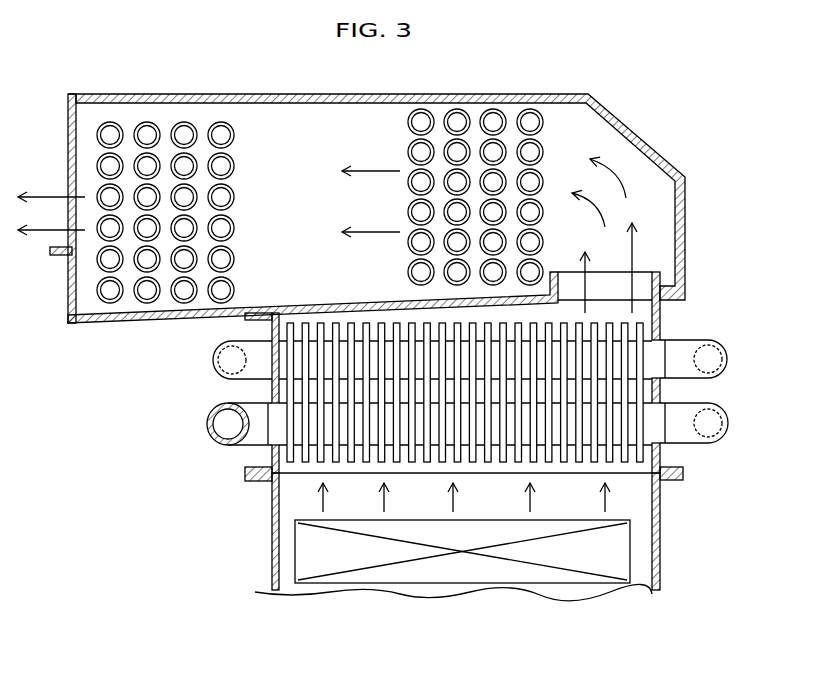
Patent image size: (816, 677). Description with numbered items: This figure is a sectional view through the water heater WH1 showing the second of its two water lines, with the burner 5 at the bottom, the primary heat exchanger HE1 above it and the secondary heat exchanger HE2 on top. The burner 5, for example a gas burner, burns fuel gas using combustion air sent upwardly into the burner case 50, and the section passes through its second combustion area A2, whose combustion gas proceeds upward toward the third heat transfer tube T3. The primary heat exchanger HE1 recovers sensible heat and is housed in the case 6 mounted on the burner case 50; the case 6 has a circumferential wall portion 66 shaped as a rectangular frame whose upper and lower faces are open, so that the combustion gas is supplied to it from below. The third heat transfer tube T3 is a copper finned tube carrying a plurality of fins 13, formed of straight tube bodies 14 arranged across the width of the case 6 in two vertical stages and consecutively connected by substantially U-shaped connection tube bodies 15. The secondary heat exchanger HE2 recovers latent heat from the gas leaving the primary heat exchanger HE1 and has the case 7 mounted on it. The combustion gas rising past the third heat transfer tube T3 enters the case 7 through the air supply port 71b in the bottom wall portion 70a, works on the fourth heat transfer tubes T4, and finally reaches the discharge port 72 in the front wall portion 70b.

The case 7 is at (295, 93).
The bottom wall portion 70a is at (158, 322).
The front wall portion 70b is at (68, 128).
The air supply port 71b is at (650, 265).
The discharge port 72 is at (68, 180).
The water heater WH1 is at (80, 83).
The fourth heat transfer tube T4 is at (220, 121).
The secondary heat exchanger HE2 is at (230, 93).
The primary heat exchanger HE1 is at (662, 320).
The third heat transfer tube T3 is at (716, 402).
The fins 13 is at (427, 463).
The case 6 is at (661, 395).
The circumferential wall portion 66 is at (272, 392).
The connection tube bodies 15 is at (223, 441).
The straight tube bodies 14 is at (659, 432).
The second combustion area A2 is at (478, 520).
The burner case 50 is at (660, 516).
The burner 5 is at (620, 560).